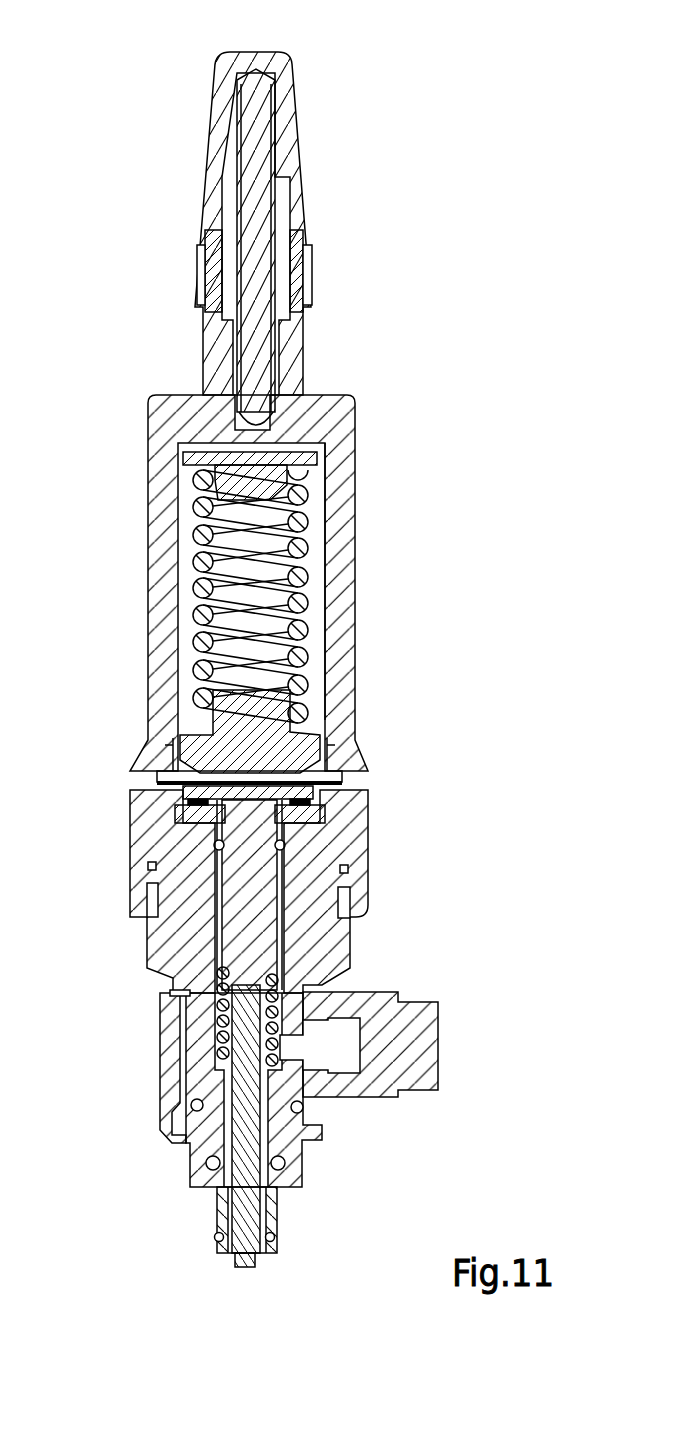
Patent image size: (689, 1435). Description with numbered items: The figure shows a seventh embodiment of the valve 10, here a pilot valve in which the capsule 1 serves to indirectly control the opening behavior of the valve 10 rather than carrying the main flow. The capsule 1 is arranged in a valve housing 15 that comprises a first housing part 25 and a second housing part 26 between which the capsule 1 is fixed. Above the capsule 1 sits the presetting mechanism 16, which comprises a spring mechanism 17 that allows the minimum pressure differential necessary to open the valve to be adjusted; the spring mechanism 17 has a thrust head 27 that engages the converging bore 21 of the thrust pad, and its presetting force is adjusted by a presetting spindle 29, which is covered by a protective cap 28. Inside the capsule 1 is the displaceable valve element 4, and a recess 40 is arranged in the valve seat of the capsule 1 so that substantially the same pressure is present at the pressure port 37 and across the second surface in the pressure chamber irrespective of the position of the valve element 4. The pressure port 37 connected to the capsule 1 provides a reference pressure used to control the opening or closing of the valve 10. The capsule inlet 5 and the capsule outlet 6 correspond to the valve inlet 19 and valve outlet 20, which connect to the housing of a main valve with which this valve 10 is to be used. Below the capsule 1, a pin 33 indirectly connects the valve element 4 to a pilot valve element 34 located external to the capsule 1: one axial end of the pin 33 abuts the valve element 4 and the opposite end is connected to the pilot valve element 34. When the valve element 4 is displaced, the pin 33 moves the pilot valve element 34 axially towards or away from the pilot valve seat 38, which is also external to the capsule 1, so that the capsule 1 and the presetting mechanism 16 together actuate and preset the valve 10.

The valve 10 is at (294, 669).
The protective cap 28 is at (292, 62).
The presetting spindle 29 is at (245, 134).
The presetting mechanism 16 is at (320, 215).
The valve housing 15 is at (343, 548).
The first housing part 25 is at (340, 695).
The spring mechanism 17 is at (307, 520).
The converging bore 21 is at (310, 727).
The thrust head 27 is at (195, 745).
The capsule 1 is at (322, 742).
The valve element 4 is at (345, 788).
The recess 40 is at (210, 830).
The capsule inlet 5 is at (205, 815).
The capsule outlet 6 is at (310, 830).
The pin 33 is at (240, 918).
The second housing part 26 is at (163, 938).
The pressure port 37 is at (342, 1058).
The valve outlet 20 is at (258, 1240).
The valve inlet 19 is at (268, 1205).
The pilot valve seat 38 is at (228, 1250).
The pilot valve element 34 is at (225, 1258).